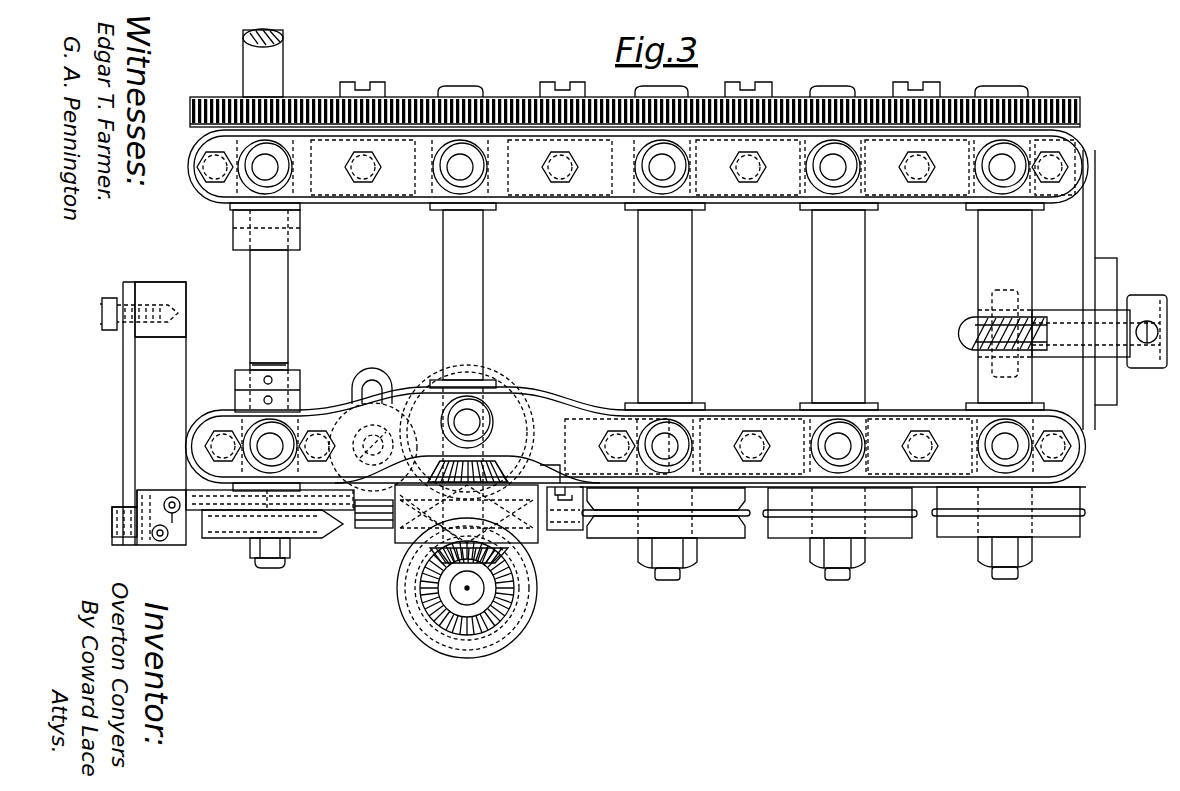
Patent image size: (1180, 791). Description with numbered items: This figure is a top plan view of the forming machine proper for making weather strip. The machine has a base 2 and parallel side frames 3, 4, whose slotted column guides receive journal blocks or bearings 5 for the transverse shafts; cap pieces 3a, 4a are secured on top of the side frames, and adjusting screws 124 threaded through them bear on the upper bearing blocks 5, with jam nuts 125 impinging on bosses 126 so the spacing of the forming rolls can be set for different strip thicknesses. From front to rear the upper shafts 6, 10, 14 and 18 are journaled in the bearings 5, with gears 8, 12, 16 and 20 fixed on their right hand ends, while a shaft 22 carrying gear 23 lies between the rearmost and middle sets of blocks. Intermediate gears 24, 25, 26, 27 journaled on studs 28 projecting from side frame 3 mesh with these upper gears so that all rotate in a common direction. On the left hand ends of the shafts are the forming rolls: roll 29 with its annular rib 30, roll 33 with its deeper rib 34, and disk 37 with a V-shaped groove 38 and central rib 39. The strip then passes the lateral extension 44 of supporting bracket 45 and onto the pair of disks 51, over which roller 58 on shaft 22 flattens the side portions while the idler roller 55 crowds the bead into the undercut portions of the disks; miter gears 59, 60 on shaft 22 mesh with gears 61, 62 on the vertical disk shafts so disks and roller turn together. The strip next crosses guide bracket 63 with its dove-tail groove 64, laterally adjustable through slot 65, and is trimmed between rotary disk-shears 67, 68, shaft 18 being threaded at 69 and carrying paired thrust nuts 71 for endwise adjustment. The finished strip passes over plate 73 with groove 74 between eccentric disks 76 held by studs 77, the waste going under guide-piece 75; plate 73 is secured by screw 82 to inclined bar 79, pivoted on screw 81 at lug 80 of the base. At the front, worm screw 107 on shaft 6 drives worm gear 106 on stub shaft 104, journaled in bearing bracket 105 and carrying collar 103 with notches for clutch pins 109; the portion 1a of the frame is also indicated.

The frame end portion 1a is at (1140, 403).
The base 2 is at (748, 293).
The side frame 3 is at (776, 188).
The cap piece 3a is at (605, 175).
The side frame 4 is at (732, 420).
The cap plate 4a is at (560, 425).
The journal blocks or bearings 5 is at (240, 206).
The upper shaft 6 is at (986, 252).
The gear 8 is at (1030, 106).
The shaft 10 is at (855, 306).
The gear 12 is at (842, 108).
The shaft 14 is at (650, 282).
The gear 16 is at (620, 84).
The shaft 18 is at (242, 62).
The gear 20 is at (287, 108).
The shaft 22 is at (443, 288).
The gear 23 is at (464, 108).
The intermediate gear 24 is at (918, 104).
The intermediate gear 25 is at (747, 106).
The intermediate gear 26 is at (562, 108).
The intermediate gear 27 is at (370, 108).
The stub shafts or studs 28 is at (370, 88).
The disk or roll 29 is at (995, 527).
The annular peripheral rib 30 is at (990, 520).
The disk or roll 33 is at (848, 528).
The peripheral rib 34 is at (888, 506).
The disk 37 is at (625, 528).
The V-shape peripheral groove 38 is at (700, 522).
The annular rib 39 is at (705, 506).
The lateral extension 44 is at (562, 530).
The supporting bracket 45 is at (556, 466).
The disks 51 is at (482, 384).
The roller 55 is at (410, 535).
The roller 58 is at (466, 514).
The miter gear 59 is at (490, 462).
The miter gear 60 is at (440, 556).
The gear 61 is at (447, 436).
The gear 62 is at (436, 580).
The guide bracket 63 is at (372, 528).
The undercut or dove-tail groove 64 is at (352, 520).
The slot 65 is at (372, 392).
The rotary disk-shear 67 is at (242, 520).
The rotary disk-shear 68 is at (318, 512).
The screw-threading 69 is at (284, 362).
The thrust rings or nuts 71 is at (292, 388).
The plate or bracket 73 is at (180, 540).
The groove 74 is at (200, 520).
The guide-piece 75 is at (212, 500).
The disks 76 is at (164, 504).
The studs 77 is at (154, 538).
The inclined bar or member 79 is at (125, 396).
The lug or boss 80 is at (148, 292).
The screw 81 is at (108, 306).
The screw 82 is at (112, 512).
The sleeve or collar 103 is at (1130, 302).
The stub shaft 104 is at (1068, 312).
The bearing bracket 105 is at (1074, 345).
The worm gear 106 is at (990, 372).
The worm screw 107 is at (990, 325).
The clutch portion or pins 109 is at (1153, 368).
The adjusting screws or abutments 124 is at (460, 172).
The jam nuts 125 is at (450, 180).
The bosses 126 is at (480, 185).